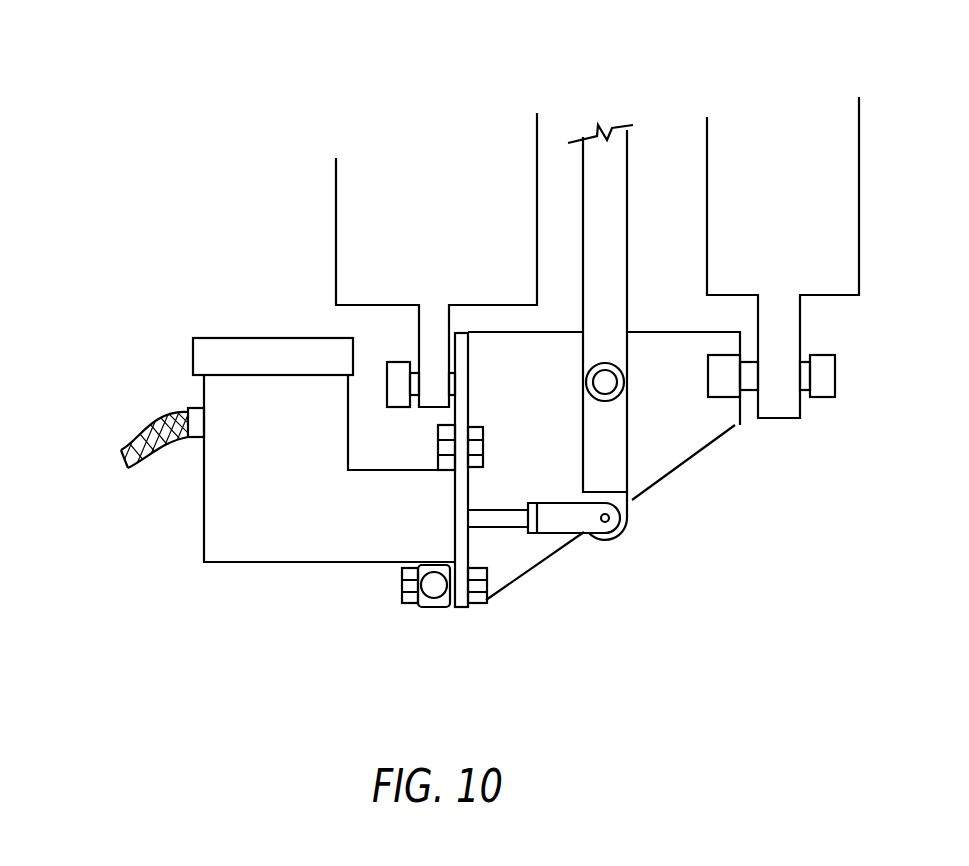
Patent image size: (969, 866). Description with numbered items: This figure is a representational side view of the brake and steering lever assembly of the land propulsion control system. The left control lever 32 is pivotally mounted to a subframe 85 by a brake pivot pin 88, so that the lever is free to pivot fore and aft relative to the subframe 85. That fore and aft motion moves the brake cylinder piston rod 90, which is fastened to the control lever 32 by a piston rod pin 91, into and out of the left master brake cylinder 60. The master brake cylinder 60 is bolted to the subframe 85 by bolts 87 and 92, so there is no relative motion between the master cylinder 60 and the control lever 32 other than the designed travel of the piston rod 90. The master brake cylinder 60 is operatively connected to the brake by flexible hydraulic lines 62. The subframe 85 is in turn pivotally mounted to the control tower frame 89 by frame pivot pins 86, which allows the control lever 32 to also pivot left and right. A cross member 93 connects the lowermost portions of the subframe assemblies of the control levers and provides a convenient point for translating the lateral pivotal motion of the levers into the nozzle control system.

The left control lever 32 is at (580, 133).
The left master brake cylinder 60 is at (204, 518).
The flexible hydraulic lines 62 is at (152, 420).
The subframe 85 is at (663, 440).
The frame pivot pins 86 is at (457, 368).
The bolt 87 is at (477, 612).
The brake pivot pin 88 is at (605, 361).
The control tower frame 89 is at (335, 177).
The brake cylinder piston rod 90 is at (509, 542).
The piston rod pin 91 is at (613, 541).
The bolt 92 is at (490, 433).
The cross member 93 is at (435, 612).